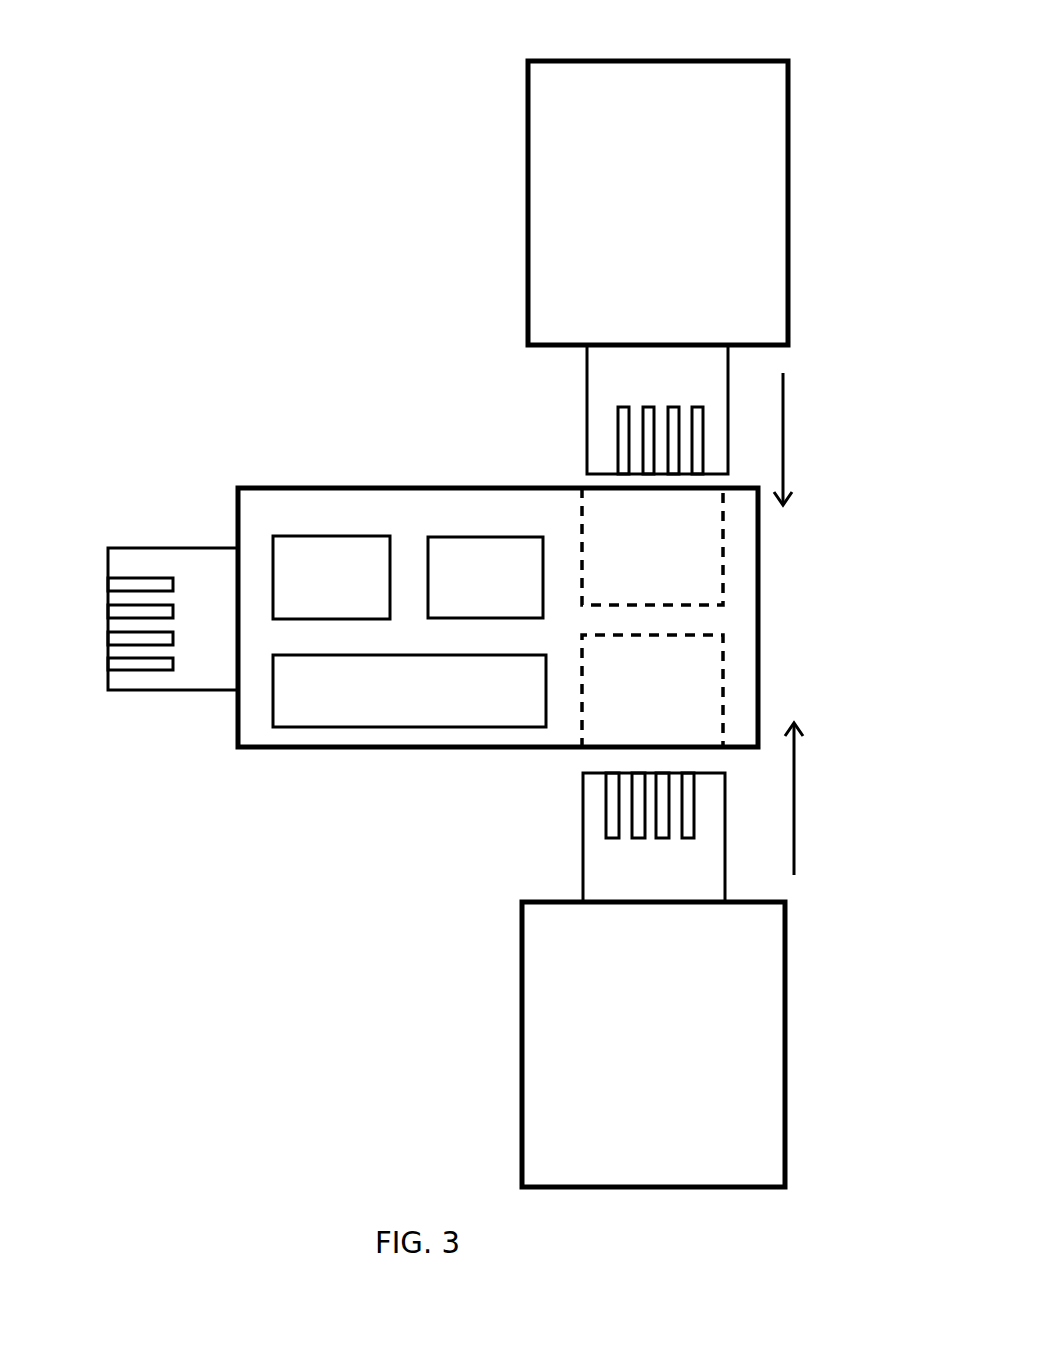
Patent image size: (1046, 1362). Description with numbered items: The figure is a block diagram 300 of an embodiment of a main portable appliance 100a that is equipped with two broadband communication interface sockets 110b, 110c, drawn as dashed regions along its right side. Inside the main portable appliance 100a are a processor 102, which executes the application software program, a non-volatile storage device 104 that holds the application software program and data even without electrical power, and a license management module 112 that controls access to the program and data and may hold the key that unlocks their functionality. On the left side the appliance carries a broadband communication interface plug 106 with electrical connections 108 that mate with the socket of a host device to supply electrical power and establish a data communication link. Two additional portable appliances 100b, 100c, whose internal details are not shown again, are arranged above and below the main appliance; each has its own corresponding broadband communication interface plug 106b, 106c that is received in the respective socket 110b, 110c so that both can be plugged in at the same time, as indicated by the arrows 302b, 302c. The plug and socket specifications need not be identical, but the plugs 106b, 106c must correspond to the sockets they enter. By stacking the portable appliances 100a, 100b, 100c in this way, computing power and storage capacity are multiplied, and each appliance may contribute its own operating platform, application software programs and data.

The block diagram 300 is at (231, 90).
The main portable appliance 100a is at (498, 571).
The additional portable appliance 100b is at (512, 230).
The additional portable appliance 100c is at (484, 1020).
The processor 102 is at (342, 594).
The storage device 104 is at (423, 713).
The license management module 112 is at (506, 599).
The broadband communication interface plug 106 is at (145, 647).
The broadband communication interface plug 106b is at (694, 390).
The broadband communication interface plug 106c is at (690, 883).
The electrical connections 108 is at (136, 679).
The broadband communication interface socket 110b is at (692, 569).
The broadband communication interface socket 110c is at (690, 713).
The arrow 302b is at (800, 438).
The arrow 302c is at (822, 785).